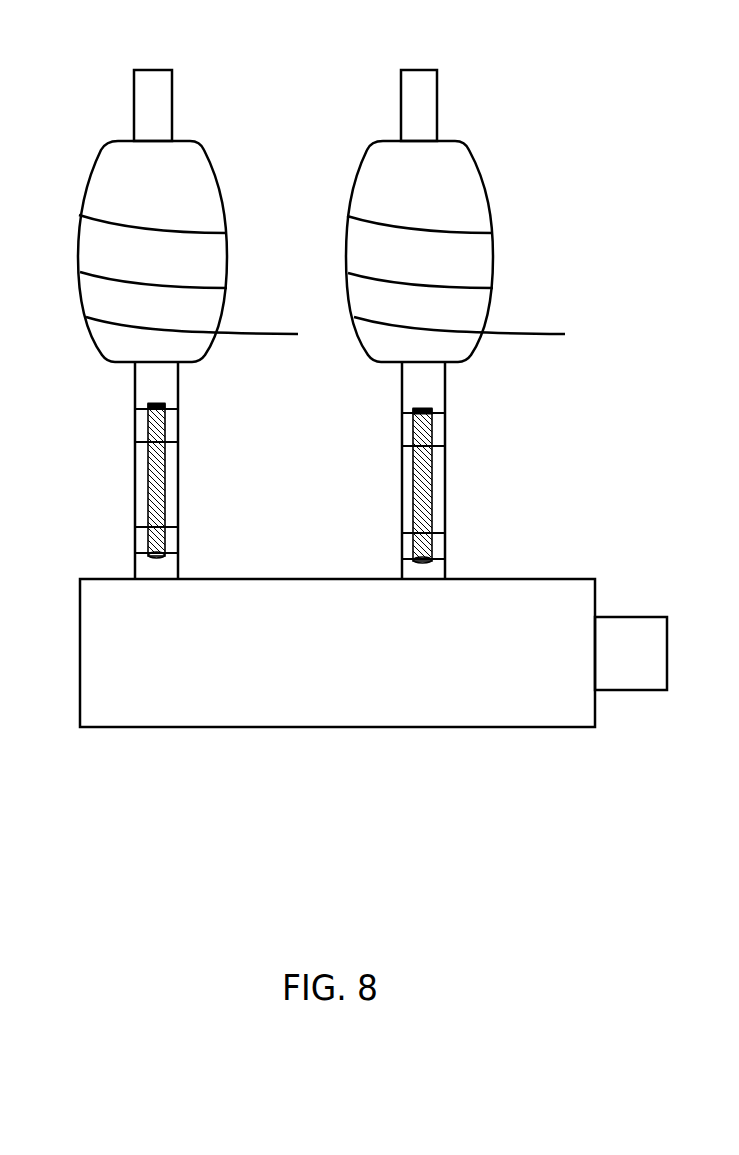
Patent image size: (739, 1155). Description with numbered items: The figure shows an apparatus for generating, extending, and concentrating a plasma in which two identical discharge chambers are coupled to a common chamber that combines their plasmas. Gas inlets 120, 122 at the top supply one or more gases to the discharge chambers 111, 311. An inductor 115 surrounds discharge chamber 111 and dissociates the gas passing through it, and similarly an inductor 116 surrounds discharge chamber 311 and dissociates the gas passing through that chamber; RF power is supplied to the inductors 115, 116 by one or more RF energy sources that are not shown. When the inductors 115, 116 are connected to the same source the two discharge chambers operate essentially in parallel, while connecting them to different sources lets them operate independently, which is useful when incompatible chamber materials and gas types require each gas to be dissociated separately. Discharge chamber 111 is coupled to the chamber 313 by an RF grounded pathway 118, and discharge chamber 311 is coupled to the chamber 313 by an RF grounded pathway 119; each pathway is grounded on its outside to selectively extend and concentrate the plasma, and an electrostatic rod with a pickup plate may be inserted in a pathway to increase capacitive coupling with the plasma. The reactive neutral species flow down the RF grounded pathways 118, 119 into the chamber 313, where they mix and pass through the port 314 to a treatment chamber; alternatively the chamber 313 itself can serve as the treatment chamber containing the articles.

The discharge chamber 111 is at (188, 251).
The inductor 115 is at (300, 180).
The inductor 116 is at (567, 180).
The RF grounded pathway 118 is at (147, 390).
The RF grounded pathway 119 is at (423, 378).
The gas inlet 120 is at (132, 83).
The gas inlet 122 is at (397, 83).
The discharge chamber 311 is at (455, 251).
The chamber 313 is at (337, 653).
The port 314 is at (631, 653).